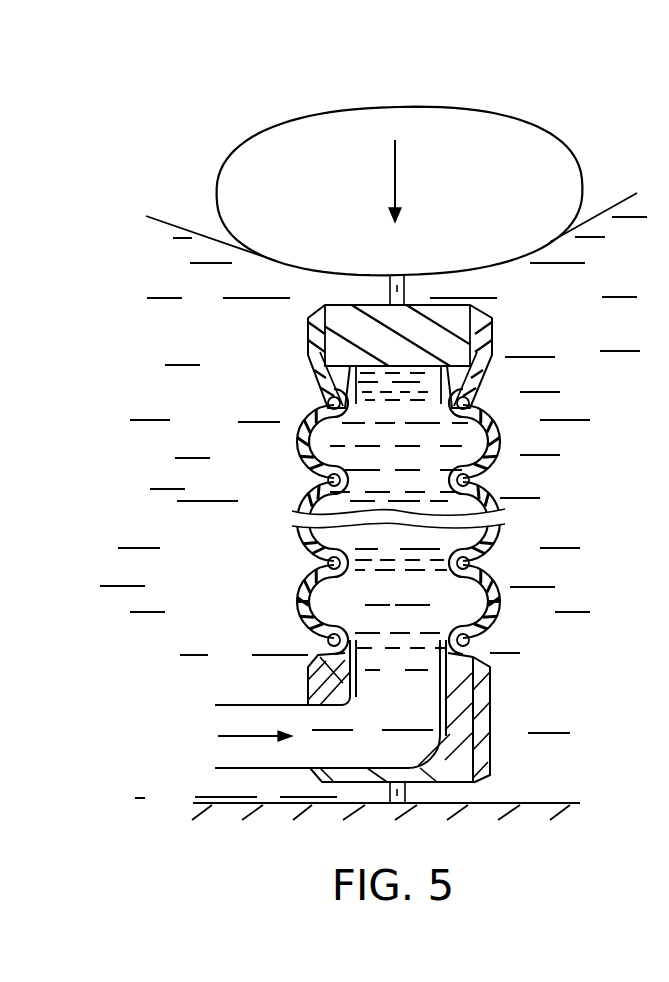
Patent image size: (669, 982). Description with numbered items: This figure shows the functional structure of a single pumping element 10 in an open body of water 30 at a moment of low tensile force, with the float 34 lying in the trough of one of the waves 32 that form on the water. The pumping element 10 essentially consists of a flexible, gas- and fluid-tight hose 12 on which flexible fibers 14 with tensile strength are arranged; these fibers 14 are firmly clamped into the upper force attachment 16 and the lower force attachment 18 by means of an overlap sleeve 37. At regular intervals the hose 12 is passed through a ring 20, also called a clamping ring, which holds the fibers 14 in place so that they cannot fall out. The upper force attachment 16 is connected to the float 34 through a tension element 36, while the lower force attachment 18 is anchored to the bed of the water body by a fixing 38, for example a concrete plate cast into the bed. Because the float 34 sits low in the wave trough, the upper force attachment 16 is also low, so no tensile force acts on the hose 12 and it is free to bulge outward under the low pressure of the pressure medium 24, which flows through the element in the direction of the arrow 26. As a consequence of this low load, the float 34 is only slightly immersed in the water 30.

The pumping element 10 is at (343, 554).
The hose 12 is at (305, 541).
The fibers 14 is at (287, 588).
The upper force attachment 16 is at (340, 323).
The lower force attachment 18 is at (467, 730).
The ring 20 is at (328, 480).
The pressure medium 24 is at (316, 622).
The arrow 26 is at (235, 740).
The body of water 30 is at (550, 304).
The waves 32 is at (148, 218).
The float 34 is at (545, 152).
The tension element 36 is at (392, 293).
The overlap sleeve 37 is at (314, 342).
The fixing 38 is at (325, 808).